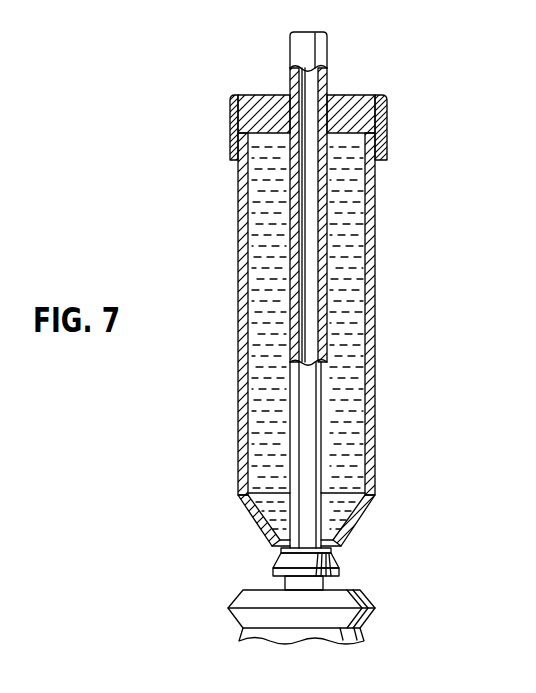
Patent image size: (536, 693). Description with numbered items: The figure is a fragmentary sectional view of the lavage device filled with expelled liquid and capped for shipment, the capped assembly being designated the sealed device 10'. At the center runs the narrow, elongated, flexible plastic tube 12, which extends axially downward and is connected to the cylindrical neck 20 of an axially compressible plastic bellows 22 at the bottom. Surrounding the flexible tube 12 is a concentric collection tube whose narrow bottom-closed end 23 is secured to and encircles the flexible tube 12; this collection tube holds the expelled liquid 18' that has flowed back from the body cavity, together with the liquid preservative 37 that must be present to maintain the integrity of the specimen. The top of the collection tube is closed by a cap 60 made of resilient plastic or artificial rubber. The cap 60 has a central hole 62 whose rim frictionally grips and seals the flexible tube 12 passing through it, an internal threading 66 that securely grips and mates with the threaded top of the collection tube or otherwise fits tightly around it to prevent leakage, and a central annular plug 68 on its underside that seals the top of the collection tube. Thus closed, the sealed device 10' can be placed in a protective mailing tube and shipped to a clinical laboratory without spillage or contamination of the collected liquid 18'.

The flexible plastic tube 12 is at (328, 52).
The central hole 62 is at (284, 100).
The cap 60 is at (376, 97).
The central annular plug 68 is at (246, 122).
The internal threading 66 is at (383, 125).
The sealed device 10' is at (343, 314).
The expelled liquid 18' is at (344, 338).
The narrow bottom-closed end 23 is at (262, 522).
The liquid preservative 37 is at (337, 520).
The cylindrical neck 20 is at (334, 560).
The axially compressible plastic bellows 22 is at (375, 616).